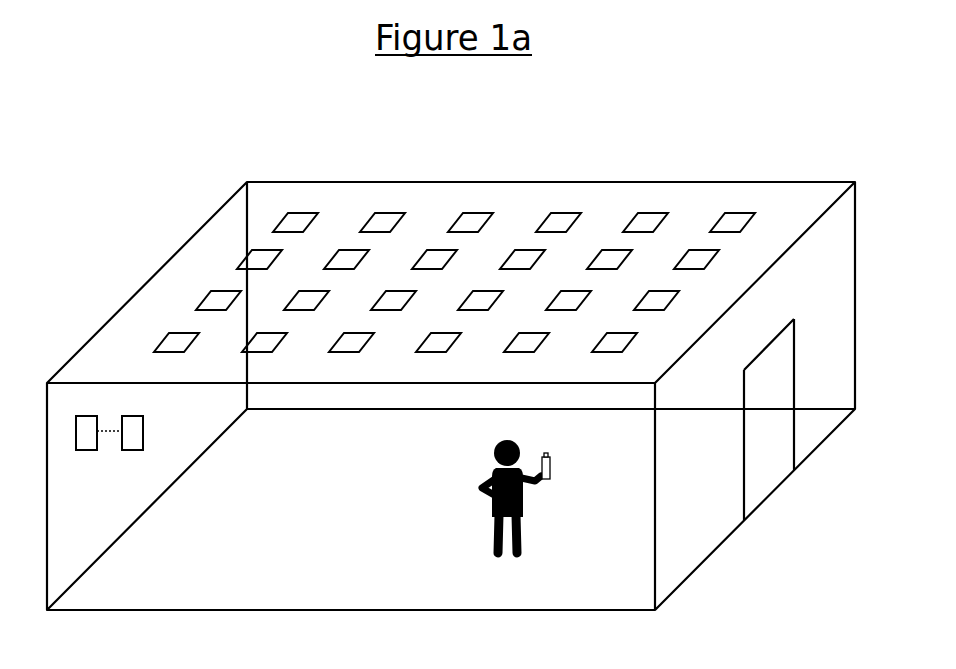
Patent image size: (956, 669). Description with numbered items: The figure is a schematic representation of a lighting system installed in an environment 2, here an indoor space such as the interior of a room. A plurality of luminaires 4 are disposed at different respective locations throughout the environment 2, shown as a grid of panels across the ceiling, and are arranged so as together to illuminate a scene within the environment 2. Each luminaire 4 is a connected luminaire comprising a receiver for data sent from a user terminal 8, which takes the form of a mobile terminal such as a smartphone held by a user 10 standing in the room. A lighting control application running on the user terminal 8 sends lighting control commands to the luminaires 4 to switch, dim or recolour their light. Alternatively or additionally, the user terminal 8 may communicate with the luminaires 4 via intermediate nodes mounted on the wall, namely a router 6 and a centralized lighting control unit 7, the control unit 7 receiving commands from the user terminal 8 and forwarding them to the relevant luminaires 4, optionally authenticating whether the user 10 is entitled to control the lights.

The environment 2 is at (698, 182).
The luminaire 4 is at (484, 213).
The router 6 is at (133, 450).
The centralized lighting control unit 7 is at (87, 450).
The user terminal 8 is at (552, 468).
The user 10 is at (497, 515).